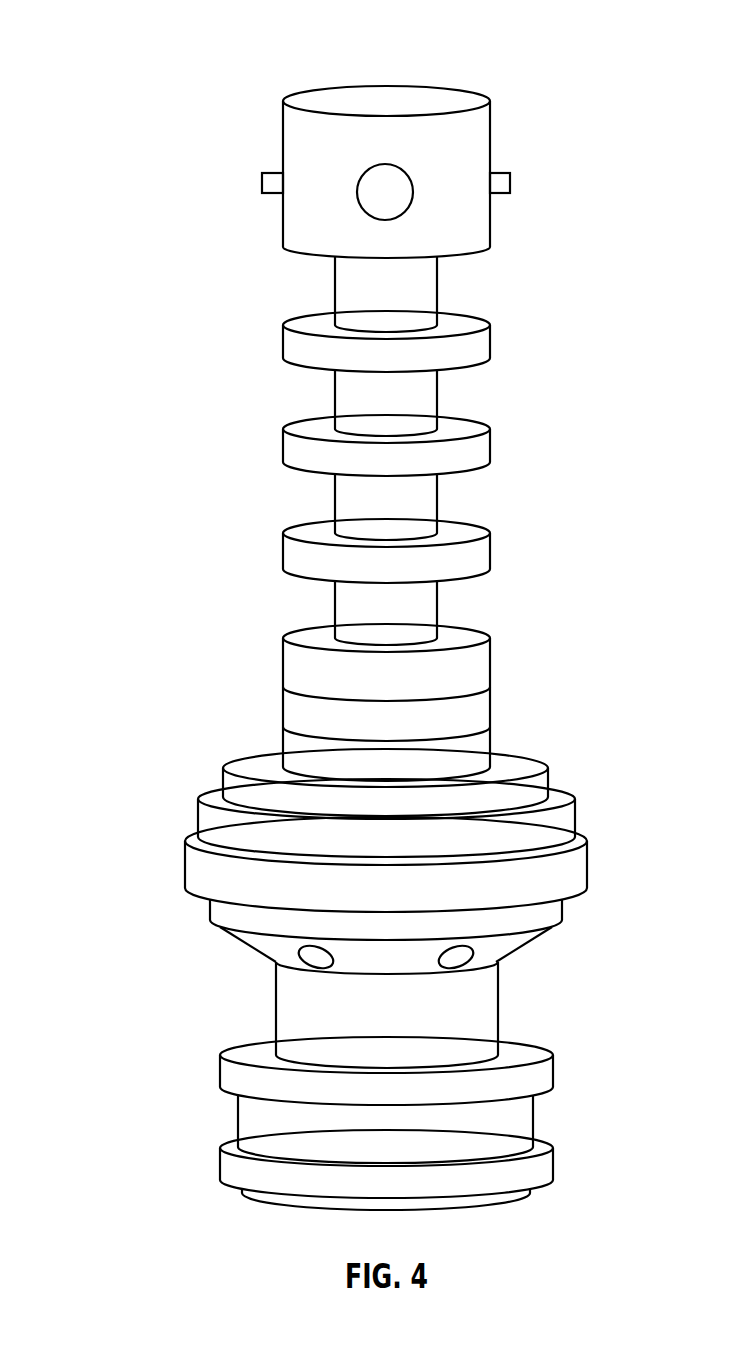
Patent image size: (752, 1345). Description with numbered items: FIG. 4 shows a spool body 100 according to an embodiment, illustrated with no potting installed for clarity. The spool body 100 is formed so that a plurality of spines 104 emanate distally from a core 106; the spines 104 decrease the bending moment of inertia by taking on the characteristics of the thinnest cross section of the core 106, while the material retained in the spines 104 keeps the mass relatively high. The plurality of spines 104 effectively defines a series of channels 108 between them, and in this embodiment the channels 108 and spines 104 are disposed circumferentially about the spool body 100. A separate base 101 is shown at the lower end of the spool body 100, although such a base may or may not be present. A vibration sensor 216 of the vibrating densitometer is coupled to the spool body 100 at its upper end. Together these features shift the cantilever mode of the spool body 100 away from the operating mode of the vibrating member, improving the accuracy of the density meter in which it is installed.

The spool body 100 is at (110, 33).
The base 101 is at (477, 1007).
The spines 104 is at (492, 341).
The core 106 is at (437, 510).
The channels 108 is at (313, 292).
The vibration sensor 216 is at (318, 88).